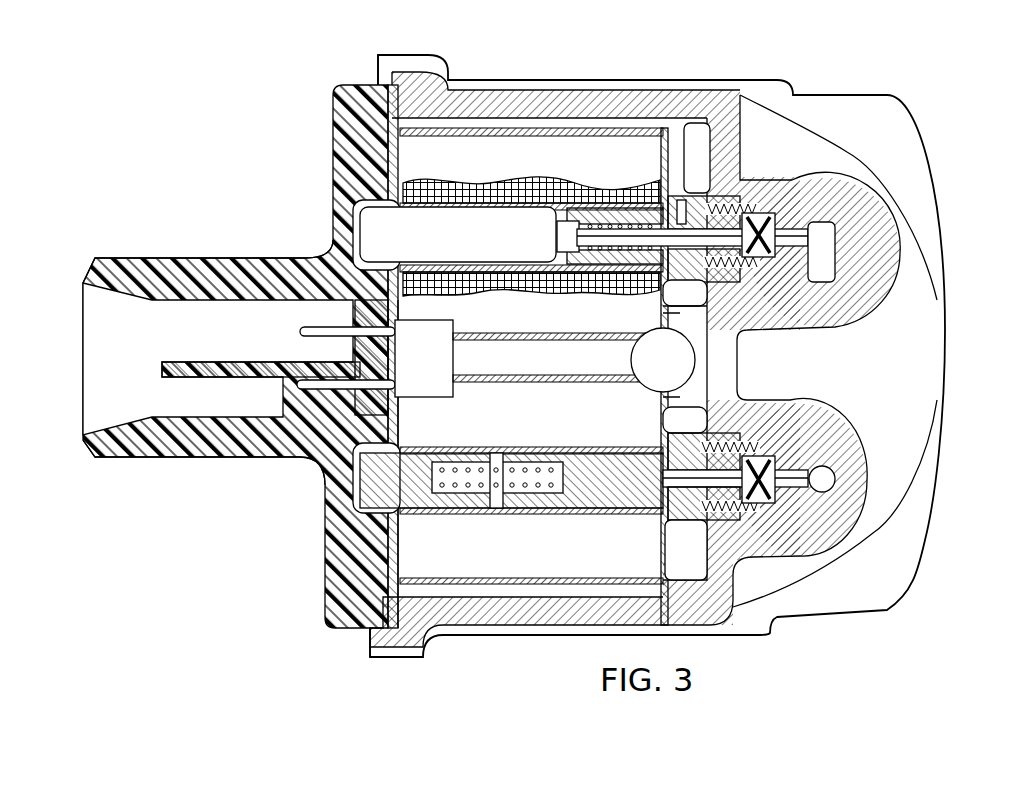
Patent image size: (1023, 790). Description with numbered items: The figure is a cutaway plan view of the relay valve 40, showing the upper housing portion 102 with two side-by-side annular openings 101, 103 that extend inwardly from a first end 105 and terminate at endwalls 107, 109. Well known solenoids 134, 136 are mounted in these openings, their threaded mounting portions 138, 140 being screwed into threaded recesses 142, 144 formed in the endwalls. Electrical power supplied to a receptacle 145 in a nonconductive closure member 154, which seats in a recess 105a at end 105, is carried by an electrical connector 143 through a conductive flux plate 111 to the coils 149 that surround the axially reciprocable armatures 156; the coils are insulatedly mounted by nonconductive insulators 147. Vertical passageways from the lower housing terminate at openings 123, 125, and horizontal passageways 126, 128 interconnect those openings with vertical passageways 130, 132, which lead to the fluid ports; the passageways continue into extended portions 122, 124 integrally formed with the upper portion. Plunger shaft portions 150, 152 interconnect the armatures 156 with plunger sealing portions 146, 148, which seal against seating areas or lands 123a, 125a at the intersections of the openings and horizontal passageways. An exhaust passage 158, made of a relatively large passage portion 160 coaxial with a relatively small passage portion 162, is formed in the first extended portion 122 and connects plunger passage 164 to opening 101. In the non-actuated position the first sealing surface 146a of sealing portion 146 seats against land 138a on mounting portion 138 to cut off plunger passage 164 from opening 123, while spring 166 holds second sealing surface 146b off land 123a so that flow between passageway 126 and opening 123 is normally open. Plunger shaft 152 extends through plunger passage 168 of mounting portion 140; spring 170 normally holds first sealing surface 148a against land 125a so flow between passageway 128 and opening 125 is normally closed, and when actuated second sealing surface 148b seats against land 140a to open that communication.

The pump assembly 40 is at (963, 213).
The annular opening 101 is at (442, 120).
The upper housing portion 102 is at (397, 645).
The annular opening 103 is at (453, 600).
The first end 105 is at (380, 73).
The recess 105a is at (348, 100).
The endwall 107 is at (702, 205).
The endwall 109 is at (664, 590).
The conductive flux plate 111 is at (399, 424).
The first extended portion 122 is at (876, 314).
The opening 123 is at (760, 262).
The seating area or land 123a is at (773, 252).
The second extended portion 124 is at (856, 428).
The opening 125 is at (760, 500).
The seating area or land 125a is at (777, 503).
The horizontal passageway 126 is at (796, 224).
The horizontal passageway 128 is at (797, 469).
The vertical passageway 130 is at (836, 242).
The vertical passageway 132 is at (823, 477).
The first solenoid 134 is at (424, 158).
The second solenoid 136 is at (418, 552).
The threaded mounting portion 138 is at (703, 280).
The land 138a is at (704, 303).
The threaded mounting portion 140 is at (704, 512).
The land 140a is at (750, 505).
The threaded recess 142 is at (762, 264).
The electrical connector 143 is at (426, 371).
The threaded recess 144 is at (750, 500).
The receptacle 145 is at (190, 300).
The plunger sealing portion 146 is at (769, 213).
The first sealing surface 146a is at (752, 213).
The second sealing surface 146b is at (846, 153).
The nonconductive insulators 147 is at (508, 582).
The plunger sealing portion 148 is at (762, 457).
The first sealing surface 148a is at (700, 444).
The second sealing surface 148b is at (786, 460).
The coils 149 is at (484, 185).
The plunger shaft portion 150 is at (705, 210).
The plunger shaft portion 152 is at (681, 521).
The nonconductive closure member 154 is at (138, 444).
The armatures 156 is at (457, 248).
The exhaust passage 158 is at (686, 190).
The relatively large passage portion 160 is at (668, 180).
The relatively small passage portion 162 is at (678, 202).
The plunger passage 164 is at (650, 290).
The spring 166 is at (590, 222).
The plunger passage 168 is at (660, 445).
The spring 170 is at (531, 490).